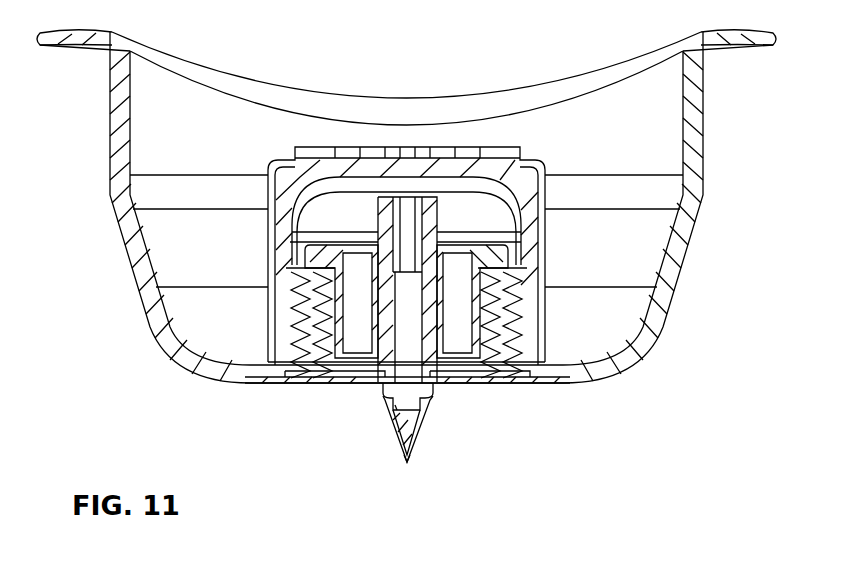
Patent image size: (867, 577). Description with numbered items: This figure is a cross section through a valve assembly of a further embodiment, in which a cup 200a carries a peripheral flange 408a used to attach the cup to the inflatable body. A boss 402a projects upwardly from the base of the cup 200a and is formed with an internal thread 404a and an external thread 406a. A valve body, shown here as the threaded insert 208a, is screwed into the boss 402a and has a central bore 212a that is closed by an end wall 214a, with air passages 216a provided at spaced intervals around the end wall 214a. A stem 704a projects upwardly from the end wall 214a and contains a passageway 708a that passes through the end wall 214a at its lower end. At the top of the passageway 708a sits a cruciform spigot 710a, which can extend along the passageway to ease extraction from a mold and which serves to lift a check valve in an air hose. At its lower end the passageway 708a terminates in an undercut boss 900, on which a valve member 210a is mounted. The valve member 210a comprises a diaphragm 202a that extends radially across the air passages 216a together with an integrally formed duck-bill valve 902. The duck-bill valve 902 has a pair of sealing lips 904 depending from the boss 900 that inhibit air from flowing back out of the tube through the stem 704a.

The cup 200a is at (705, 261).
The peripheral flange 408a is at (68, 40).
The cap 208a is at (277, 155).
The stem 704a is at (378, 222).
The cruciform spigot 710a is at (410, 205).
The central bore 212a is at (333, 272).
The external thread 406a is at (335, 302).
The internal thread 404a is at (330, 318).
The boss 402a is at (300, 372).
The end wall 214a is at (320, 385).
The diaphragm 202a is at (355, 390).
The air passages 216a is at (475, 385).
The undercut boss 900 is at (385, 398).
The passageway 708a is at (430, 390).
The valve member 210a is at (438, 439).
The duck-bill valve 902 is at (409, 458).
The sealing lips 904 is at (405, 458).